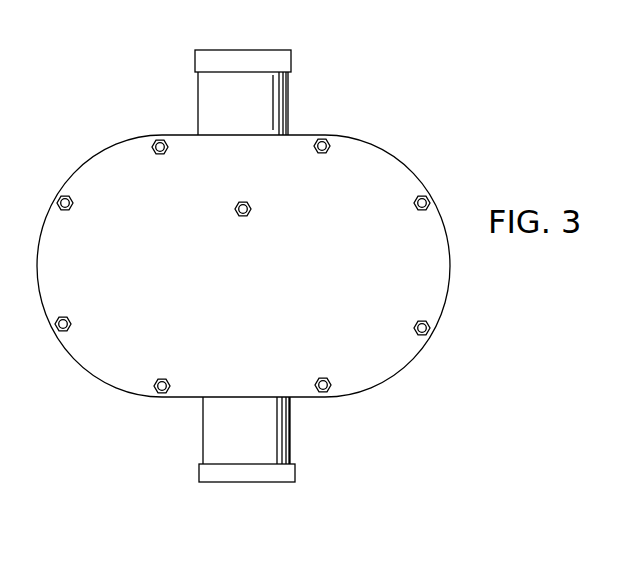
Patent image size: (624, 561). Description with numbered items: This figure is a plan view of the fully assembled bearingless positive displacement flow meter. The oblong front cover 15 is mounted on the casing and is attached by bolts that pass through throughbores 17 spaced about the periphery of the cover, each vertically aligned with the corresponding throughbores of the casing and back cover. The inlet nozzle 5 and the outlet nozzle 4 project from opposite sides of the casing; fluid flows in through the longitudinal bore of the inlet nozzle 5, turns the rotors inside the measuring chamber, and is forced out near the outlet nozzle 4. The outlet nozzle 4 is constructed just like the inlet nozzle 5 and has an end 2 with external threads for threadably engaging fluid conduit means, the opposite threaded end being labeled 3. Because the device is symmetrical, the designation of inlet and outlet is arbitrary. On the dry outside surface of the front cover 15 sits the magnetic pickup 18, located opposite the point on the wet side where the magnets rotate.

The end 2 is at (268, 50).
The lower flange 3 is at (273, 482).
The outlet nozzle 4 is at (288, 115).
The inlet nozzle 5 is at (290, 433).
The front cover 15 is at (370, 172).
The throughbore 17 is at (428, 200).
The magnetic pickup 18 is at (264, 208).